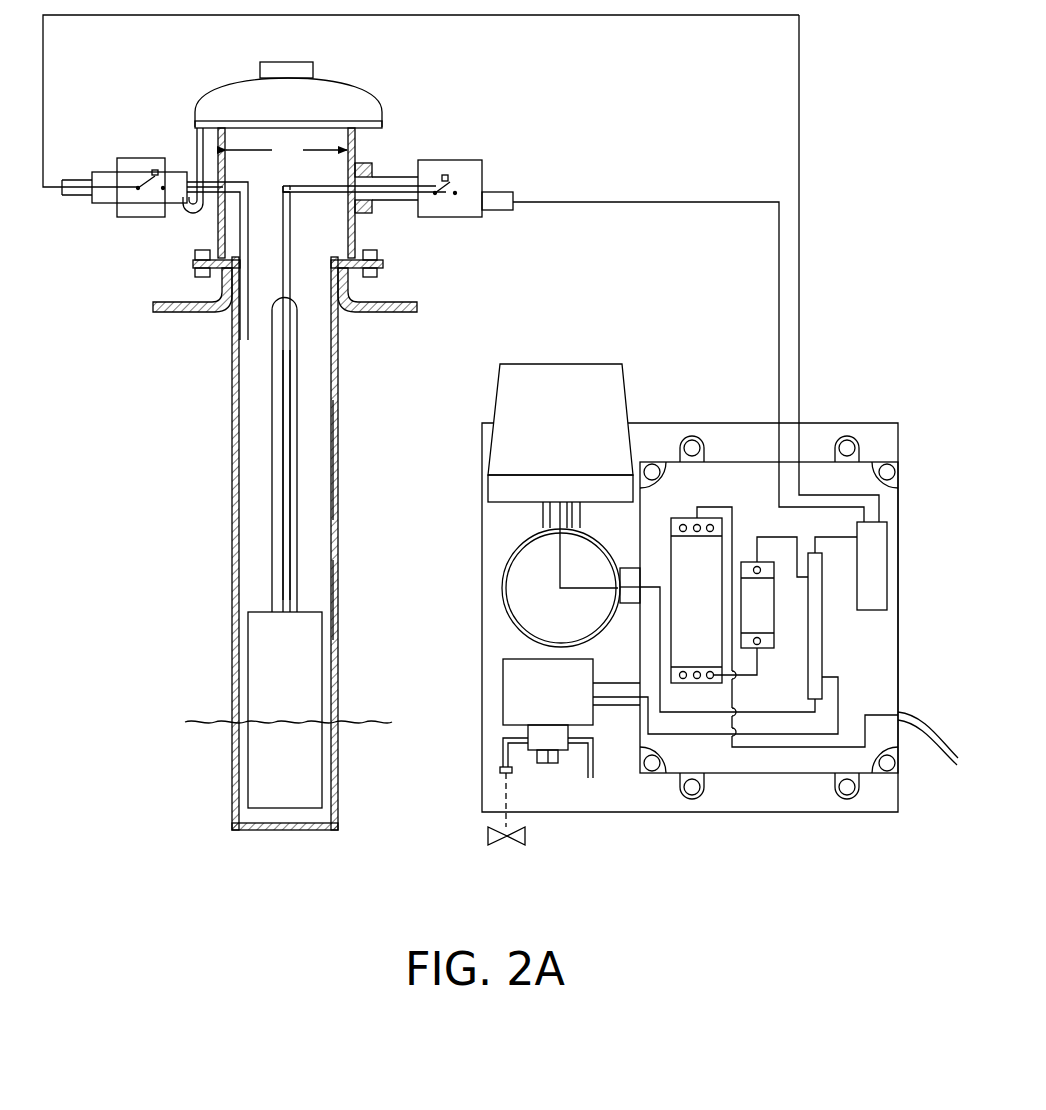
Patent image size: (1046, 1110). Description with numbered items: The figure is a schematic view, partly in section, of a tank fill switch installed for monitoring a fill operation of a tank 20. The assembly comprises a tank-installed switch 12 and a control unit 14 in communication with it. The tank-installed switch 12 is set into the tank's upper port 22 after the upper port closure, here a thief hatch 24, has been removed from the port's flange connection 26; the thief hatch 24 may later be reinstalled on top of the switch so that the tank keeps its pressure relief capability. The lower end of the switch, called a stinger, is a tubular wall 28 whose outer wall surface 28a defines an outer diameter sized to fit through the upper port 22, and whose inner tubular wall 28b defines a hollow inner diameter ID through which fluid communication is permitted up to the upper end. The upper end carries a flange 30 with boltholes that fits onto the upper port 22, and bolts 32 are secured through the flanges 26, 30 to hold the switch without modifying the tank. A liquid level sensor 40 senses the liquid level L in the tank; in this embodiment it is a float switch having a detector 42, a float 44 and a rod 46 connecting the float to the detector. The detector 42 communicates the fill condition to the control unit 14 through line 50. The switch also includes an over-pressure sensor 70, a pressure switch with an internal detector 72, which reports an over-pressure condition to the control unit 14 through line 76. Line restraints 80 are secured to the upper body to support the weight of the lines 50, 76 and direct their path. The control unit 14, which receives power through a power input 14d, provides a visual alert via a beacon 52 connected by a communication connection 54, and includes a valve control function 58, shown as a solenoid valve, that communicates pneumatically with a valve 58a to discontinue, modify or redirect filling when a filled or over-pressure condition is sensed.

The tank-installed switch 12 is at (343, 124).
The control unit 14 is at (877, 647).
The power input 14d is at (935, 748).
The tank 20 is at (190, 302).
The upper port 22 is at (350, 292).
The thief hatch 24 is at (313, 88).
The flange connection 26 is at (383, 268).
The tubular wall 28 is at (338, 533).
The outer wall surface 28a is at (338, 590).
The inner tubular wall 28b is at (333, 487).
The flange 30 is at (197, 258).
The bolts 32 is at (374, 249).
The liquid level sensor 40 is at (292, 405).
The detector 42 is at (337, 181).
The float 44 is at (308, 770).
The rod 46 is at (283, 507).
The line 50 is at (553, 202).
The beacon 52 is at (579, 411).
The communication connection 54 is at (558, 568).
The valve control function 58 is at (503, 692).
The valve 58a is at (527, 835).
The over-pressure sensor 70 is at (136, 172).
The internal detector 72 is at (243, 184).
The line 76 is at (799, 340).
The line restraints 80 is at (197, 142).
The liquid level L is at (207, 722).